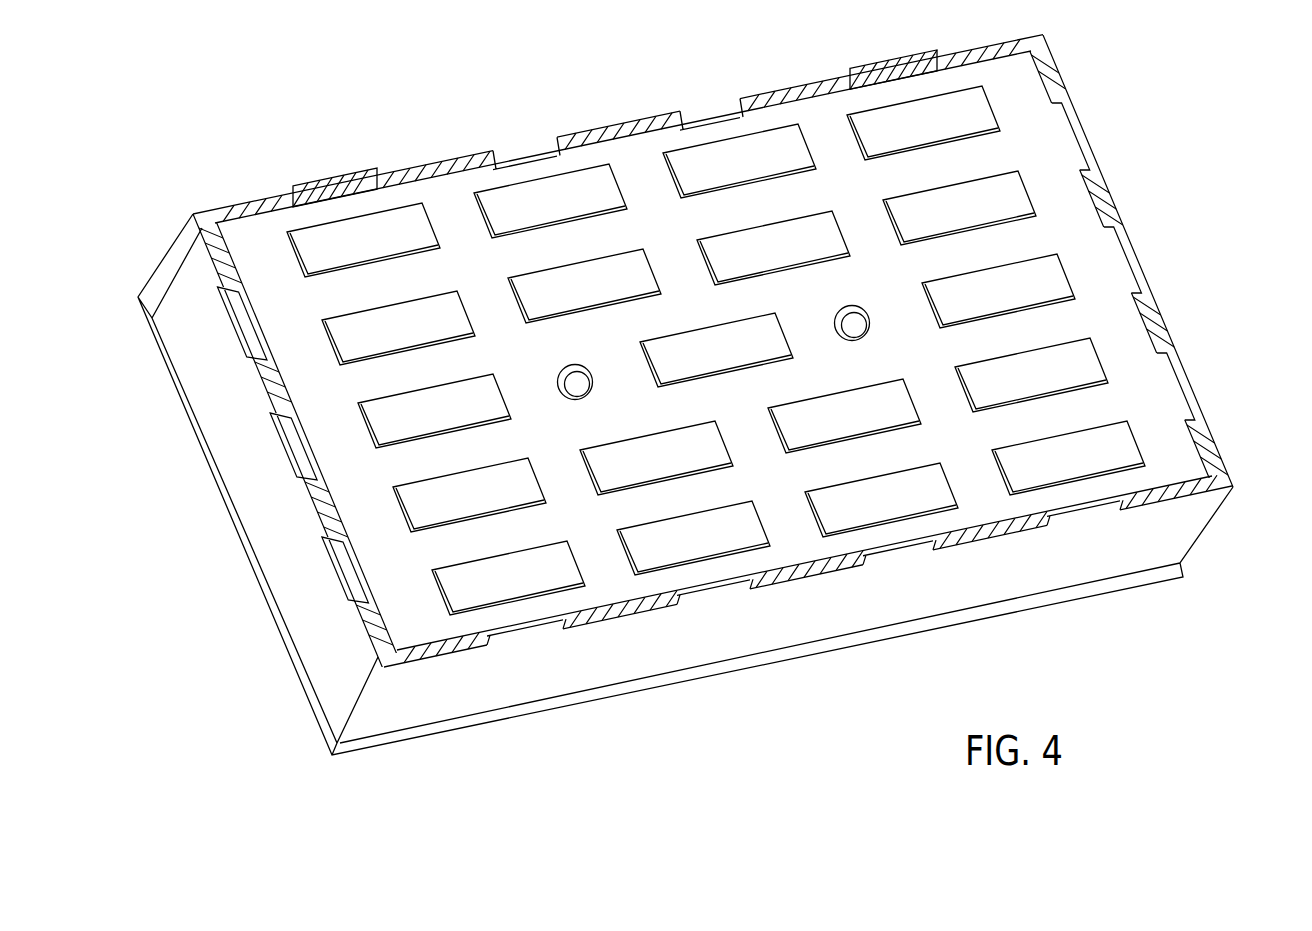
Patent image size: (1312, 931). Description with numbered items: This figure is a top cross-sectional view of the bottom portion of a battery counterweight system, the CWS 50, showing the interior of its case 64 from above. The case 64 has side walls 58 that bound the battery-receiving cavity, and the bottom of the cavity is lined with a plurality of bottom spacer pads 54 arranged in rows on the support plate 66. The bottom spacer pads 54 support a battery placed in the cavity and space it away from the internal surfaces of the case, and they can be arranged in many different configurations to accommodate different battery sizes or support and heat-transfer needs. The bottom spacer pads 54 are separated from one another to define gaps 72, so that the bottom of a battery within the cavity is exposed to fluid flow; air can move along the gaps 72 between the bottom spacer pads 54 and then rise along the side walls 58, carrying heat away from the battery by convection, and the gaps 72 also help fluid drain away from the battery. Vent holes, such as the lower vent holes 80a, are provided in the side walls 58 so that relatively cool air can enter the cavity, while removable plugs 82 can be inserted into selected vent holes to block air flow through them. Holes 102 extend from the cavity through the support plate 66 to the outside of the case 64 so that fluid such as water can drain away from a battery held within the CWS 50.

The counterweight system 50 is at (244, 104).
The bottom spacer pads 54 is at (716, 350).
The side walls 58 is at (803, 80).
The case 64 is at (1192, 330).
The support plate 66 is at (637, 167).
The gaps 72 is at (1030, 240).
The vent holes 80a is at (524, 130).
The removable plugs 82 is at (337, 180).
The holes 102 is at (577, 384).